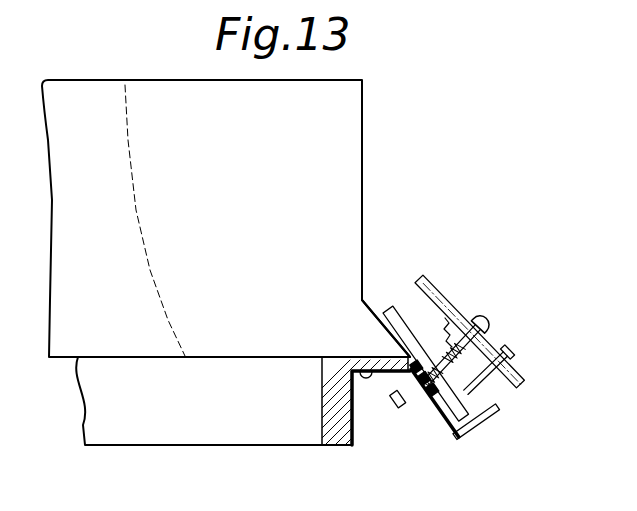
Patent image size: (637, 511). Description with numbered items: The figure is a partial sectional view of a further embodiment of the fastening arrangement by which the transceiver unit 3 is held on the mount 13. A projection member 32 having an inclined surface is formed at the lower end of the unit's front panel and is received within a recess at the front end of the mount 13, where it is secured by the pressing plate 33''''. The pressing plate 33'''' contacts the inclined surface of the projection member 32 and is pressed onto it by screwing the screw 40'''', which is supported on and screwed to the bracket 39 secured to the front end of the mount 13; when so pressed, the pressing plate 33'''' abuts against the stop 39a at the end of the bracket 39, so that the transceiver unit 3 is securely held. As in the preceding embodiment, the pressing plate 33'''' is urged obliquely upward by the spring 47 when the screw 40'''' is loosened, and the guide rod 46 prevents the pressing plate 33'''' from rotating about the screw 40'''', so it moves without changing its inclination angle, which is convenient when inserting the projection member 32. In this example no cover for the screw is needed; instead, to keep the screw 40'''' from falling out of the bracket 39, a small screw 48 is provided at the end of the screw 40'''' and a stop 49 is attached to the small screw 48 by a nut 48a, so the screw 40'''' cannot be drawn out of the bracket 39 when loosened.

The transceiver unit 3 is at (341, 155).
The mount 13 is at (308, 447).
The projection member 32 is at (386, 340).
The pressing plate 33'''' is at (426, 331).
The bracket 39 is at (447, 432).
The stop 39a is at (473, 428).
The screw 40'''' is at (469, 332).
The guide rod 46 is at (492, 373).
The spring 47 is at (441, 412).
The small screw 48 is at (390, 410).
The nut 48a is at (392, 395).
The stop 49 is at (418, 408).